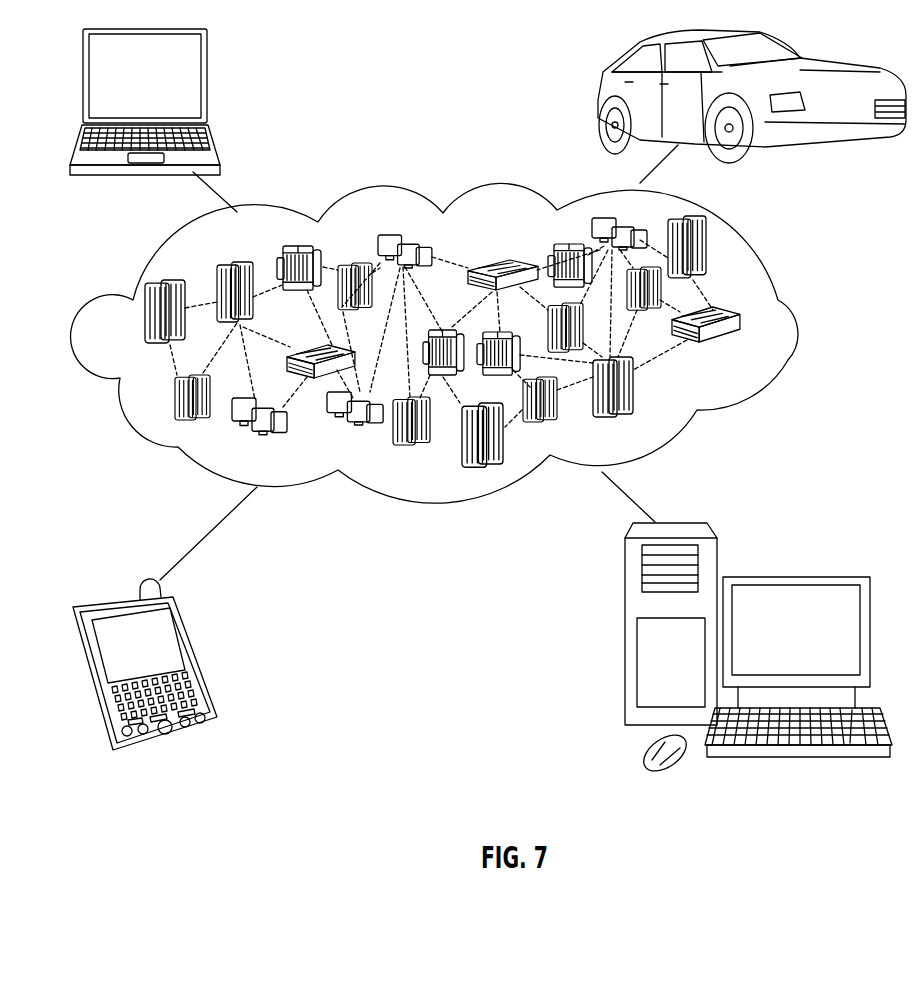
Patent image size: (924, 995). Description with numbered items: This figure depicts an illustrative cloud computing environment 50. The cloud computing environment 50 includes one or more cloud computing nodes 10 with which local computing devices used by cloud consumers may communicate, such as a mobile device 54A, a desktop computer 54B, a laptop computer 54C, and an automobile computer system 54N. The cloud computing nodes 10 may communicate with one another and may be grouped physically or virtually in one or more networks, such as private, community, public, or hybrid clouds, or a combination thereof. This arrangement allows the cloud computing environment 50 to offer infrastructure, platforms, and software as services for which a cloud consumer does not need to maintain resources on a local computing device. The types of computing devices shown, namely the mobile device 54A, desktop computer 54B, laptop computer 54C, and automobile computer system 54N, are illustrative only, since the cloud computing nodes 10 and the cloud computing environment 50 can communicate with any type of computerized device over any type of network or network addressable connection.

The cloud computing nodes 10 is at (741, 349).
The cloud computing environment 50 is at (460, 343).
The mobile device 54A is at (198, 657).
The desktop computer 54B is at (794, 576).
The laptop computer 54C is at (207, 80).
The automobile computer system 54N is at (597, 96).